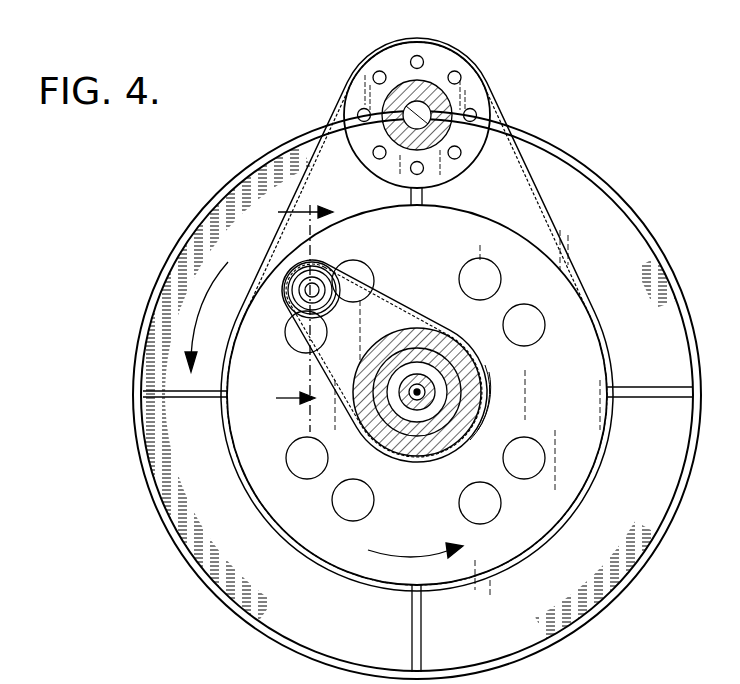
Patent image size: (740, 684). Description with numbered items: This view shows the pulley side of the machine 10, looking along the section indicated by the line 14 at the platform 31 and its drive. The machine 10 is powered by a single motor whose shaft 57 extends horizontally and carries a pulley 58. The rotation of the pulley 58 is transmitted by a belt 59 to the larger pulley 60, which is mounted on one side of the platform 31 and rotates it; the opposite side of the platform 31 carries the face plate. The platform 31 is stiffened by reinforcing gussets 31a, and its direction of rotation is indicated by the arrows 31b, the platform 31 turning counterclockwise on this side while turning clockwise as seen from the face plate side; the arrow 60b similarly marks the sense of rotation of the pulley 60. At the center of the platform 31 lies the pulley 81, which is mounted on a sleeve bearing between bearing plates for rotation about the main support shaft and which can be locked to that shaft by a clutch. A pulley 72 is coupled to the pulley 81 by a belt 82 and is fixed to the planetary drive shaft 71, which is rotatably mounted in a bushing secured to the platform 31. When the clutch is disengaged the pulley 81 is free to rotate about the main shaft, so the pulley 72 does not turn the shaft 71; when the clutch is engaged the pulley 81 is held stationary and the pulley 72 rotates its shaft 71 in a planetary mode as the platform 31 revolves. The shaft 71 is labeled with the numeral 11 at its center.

The machine 10 is at (258, 124).
The capstan shaft 11 is at (422, 392).
The section line 14- 14 is at (288, 317).
The platform 31 is at (619, 184).
The reinforcing gussets 31a is at (197, 402).
The arrows 31b is at (200, 310).
The shaft 57 is at (406, 126).
The pulley 58 is at (453, 72).
The belt 59 is at (527, 152).
The pulley 60 is at (556, 402).
The disc rotation direction 60b is at (410, 556).
The planetary drive shaft 71 is at (315, 284).
The pulley 72 is at (327, 312).
The pulley 81 is at (413, 461).
The capstan drive belt 82 is at (402, 303).